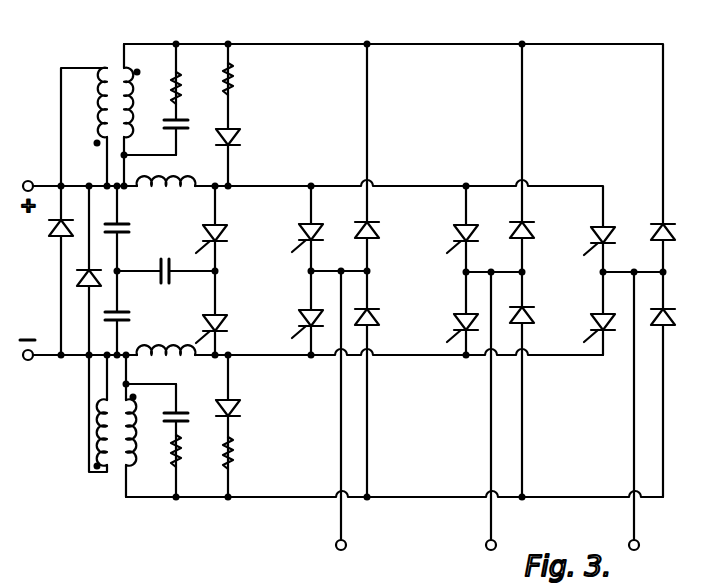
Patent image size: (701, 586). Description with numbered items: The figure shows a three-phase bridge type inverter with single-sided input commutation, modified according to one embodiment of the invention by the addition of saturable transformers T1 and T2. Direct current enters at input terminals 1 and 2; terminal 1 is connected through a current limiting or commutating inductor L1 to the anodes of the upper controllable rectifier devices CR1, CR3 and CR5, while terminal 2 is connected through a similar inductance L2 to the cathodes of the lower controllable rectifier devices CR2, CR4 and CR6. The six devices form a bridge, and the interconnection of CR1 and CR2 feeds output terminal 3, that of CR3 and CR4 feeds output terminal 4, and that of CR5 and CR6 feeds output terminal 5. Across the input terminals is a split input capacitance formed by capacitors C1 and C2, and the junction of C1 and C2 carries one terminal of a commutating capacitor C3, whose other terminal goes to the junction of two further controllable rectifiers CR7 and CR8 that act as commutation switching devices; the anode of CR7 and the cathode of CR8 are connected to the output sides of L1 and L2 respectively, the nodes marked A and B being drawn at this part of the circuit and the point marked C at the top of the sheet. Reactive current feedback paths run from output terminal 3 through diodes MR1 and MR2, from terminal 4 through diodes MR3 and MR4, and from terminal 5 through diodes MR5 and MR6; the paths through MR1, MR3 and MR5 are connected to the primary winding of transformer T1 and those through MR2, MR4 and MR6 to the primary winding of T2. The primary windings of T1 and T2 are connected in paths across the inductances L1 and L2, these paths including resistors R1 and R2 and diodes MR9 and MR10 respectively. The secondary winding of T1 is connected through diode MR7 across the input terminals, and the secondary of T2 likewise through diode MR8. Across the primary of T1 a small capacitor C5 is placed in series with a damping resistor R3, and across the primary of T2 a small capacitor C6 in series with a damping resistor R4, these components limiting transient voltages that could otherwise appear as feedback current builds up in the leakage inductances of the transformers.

The input terminal 1 is at (29, 180).
The input terminal 2 is at (30, 362).
The output terminal 3 is at (352, 538).
The output terminal 4 is at (502, 538).
The output terminal 5 is at (644, 538).
The node A is at (211, 182).
The node B is at (222, 271).
The node C is at (120, 31).
The saturable transformer T1 is at (113, 90).
The saturable transformer T2 is at (115, 449).
The commutating inductor L1 is at (166, 195).
The commutating inductance L2 is at (166, 343).
The resistor R1 is at (236, 86).
The resistor R2 is at (235, 460).
The damping resistor R3 is at (188, 88).
The damping resistor R4 is at (198, 458).
The capacitor C1 is at (131, 230).
The capacitor C2 is at (131, 318).
The commutating capacitor C3 is at (160, 260).
The small capacitor C5 is at (190, 127).
The small capacitor C6 is at (192, 402).
The diode MR1 is at (381, 232).
The diode MR2 is at (381, 318).
The diode MR3 is at (536, 232).
The diode MR4 is at (536, 316).
The diode MR5 is at (644, 226).
The diode MR6 is at (655, 330).
The diode MR7 is at (50, 232).
The diode MR8 is at (80, 292).
The diode MR9 is at (241, 137).
The diode MR10 is at (241, 408).
The controllable rectifier device CR1 is at (324, 226).
The controllable rectifier device CR2 is at (290, 334).
The controllable rectifier device CR3 is at (452, 226).
The controllable rectifier device CR4 is at (452, 316).
The controllable rectifier device CR5 is at (590, 226).
The controllable rectifier device CR6 is at (592, 316).
The controllable rectifier CR7 is at (229, 227).
The controllable rectifier CR8 is at (219, 315).